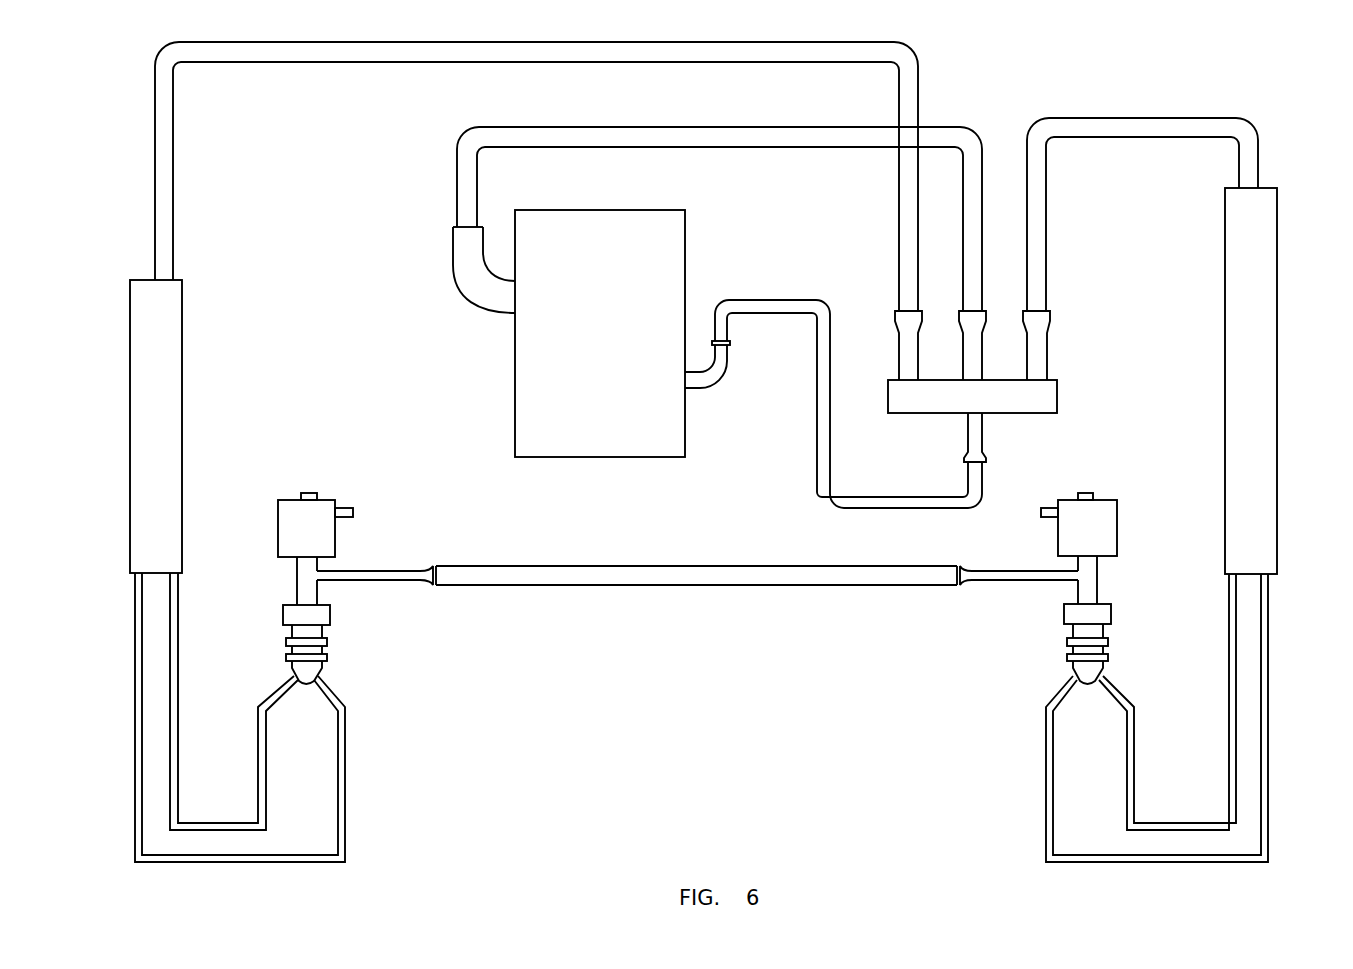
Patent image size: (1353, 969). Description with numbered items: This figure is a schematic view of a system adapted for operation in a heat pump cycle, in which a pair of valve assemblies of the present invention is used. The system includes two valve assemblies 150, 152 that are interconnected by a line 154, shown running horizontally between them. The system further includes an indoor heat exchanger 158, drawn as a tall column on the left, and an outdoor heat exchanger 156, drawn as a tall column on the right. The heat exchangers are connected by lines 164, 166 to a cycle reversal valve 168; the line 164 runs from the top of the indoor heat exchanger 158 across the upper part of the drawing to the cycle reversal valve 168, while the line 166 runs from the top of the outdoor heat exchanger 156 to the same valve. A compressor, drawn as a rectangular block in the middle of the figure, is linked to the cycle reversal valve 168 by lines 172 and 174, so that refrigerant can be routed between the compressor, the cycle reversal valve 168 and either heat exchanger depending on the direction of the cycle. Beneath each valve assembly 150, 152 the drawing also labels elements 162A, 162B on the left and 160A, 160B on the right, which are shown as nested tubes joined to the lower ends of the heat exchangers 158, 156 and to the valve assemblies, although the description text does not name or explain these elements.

The valve assembly 150 is at (310, 580).
The valve assembly 152 is at (1093, 585).
The line 154 is at (643, 577).
The outdoor heat exchanger 156 is at (1255, 295).
The indoor heat exchanger 158 is at (168, 400).
The inner tube of second container 160A is at (1148, 823).
The outer tube of second container 160B is at (1190, 859).
The inner tube of first container 162A is at (200, 823).
The outer tube of first container 162B is at (267, 863).
The line 164 is at (737, 55).
The line 166 is at (1155, 125).
The cycle reversal valve 168 is at (1005, 398).
The line 172 is at (565, 133).
The line 174 is at (822, 410).